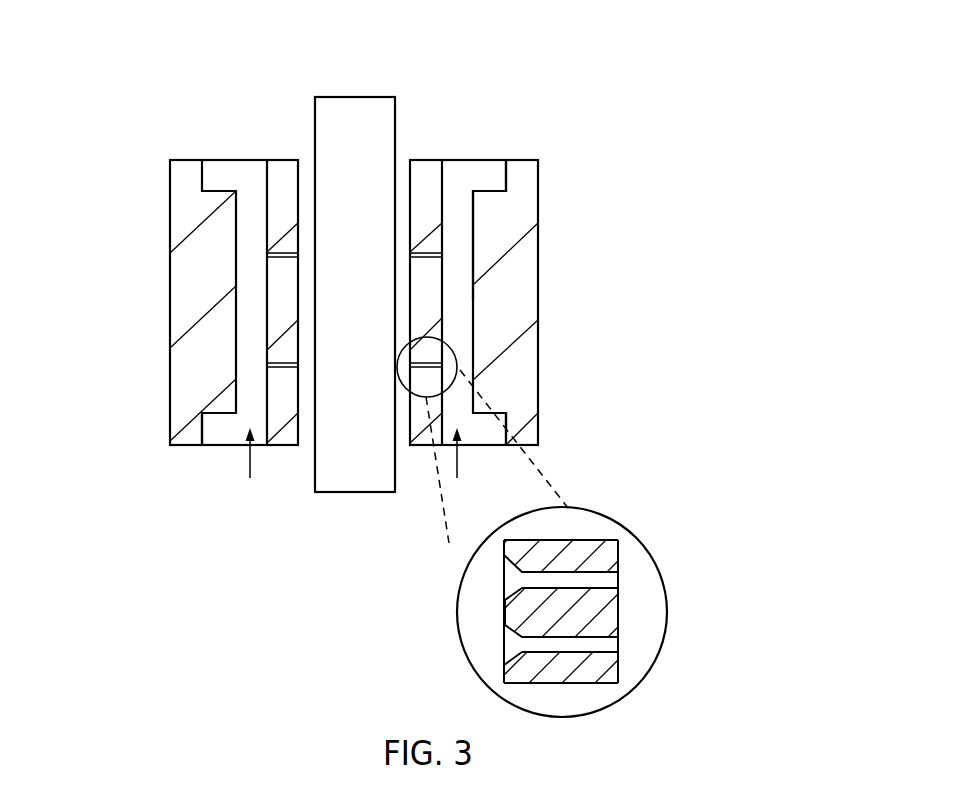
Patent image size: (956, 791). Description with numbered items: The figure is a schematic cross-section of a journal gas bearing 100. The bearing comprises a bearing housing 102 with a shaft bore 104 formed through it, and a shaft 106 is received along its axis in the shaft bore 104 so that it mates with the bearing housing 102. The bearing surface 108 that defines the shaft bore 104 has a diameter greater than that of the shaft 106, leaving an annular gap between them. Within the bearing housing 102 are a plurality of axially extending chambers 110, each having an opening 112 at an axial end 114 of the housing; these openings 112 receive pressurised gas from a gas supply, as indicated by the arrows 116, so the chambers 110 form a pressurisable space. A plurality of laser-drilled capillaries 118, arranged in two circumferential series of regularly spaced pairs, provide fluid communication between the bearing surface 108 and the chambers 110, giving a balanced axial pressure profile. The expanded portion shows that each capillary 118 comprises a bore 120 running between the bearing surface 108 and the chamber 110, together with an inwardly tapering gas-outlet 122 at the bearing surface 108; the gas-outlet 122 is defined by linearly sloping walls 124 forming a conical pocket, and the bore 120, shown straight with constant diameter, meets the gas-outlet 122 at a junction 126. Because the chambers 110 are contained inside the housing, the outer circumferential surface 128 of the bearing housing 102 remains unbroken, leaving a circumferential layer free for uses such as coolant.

The journal gas bearing 100 is at (482, 108).
The bearing housing 102 is at (522, 210).
The shaft bore 104 is at (305, 450).
The shaft 106 is at (327, 119).
The bearing surface 108 is at (410, 182).
The axially extending chamber 110 is at (244, 330).
The opening 112 is at (225, 447).
The axial end 114 is at (185, 447).
The arrows 116 is at (248, 465).
The laser-drilled capillary 118 is at (430, 247).
The bore 120 is at (578, 583).
The gas-outlet 122 is at (512, 578).
The linearly sloping walls 124 is at (512, 612).
The junction 126 is at (516, 562).
The outer circumferential surface 128 is at (170, 225).